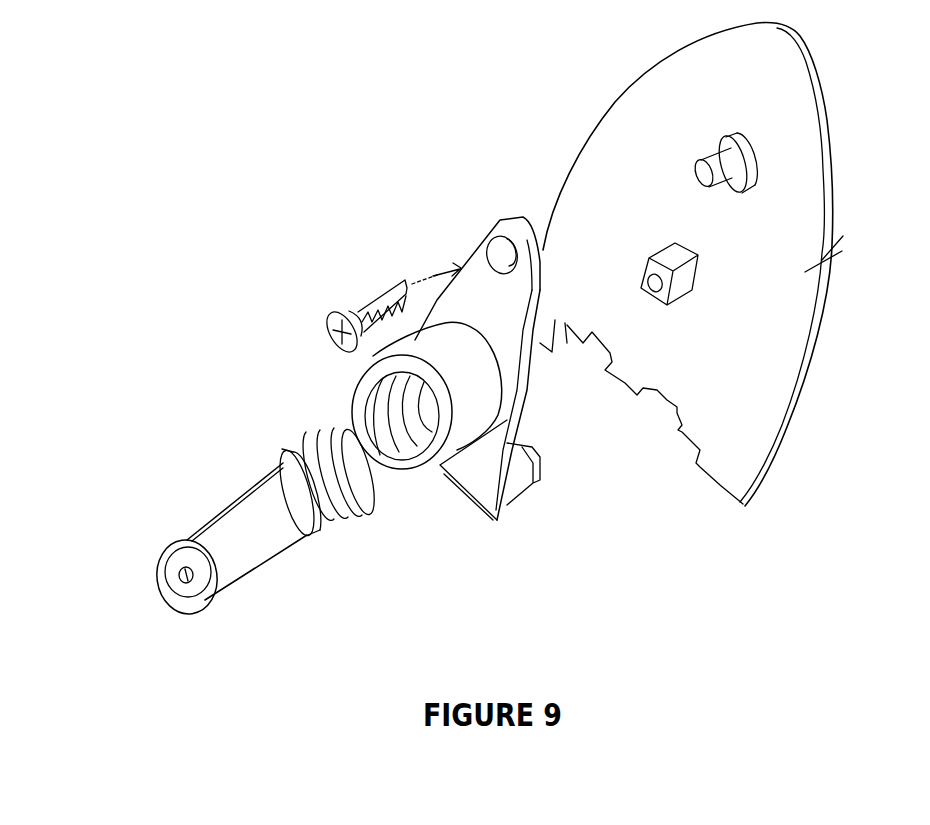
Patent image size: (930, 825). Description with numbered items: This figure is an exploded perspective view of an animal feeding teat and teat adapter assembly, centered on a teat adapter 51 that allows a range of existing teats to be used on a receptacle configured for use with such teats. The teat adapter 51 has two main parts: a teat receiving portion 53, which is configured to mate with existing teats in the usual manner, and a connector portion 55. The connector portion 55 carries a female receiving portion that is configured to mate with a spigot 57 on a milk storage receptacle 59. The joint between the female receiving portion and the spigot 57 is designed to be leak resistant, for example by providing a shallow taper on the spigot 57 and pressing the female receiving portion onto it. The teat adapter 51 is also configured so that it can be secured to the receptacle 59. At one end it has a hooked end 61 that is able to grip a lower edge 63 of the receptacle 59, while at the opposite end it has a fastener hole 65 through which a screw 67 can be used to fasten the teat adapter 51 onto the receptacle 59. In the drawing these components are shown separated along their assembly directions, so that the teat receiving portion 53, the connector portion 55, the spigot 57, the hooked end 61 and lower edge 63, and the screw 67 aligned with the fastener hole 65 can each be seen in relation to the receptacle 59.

The teat adapter 51 is at (522, 505).
The teat receiving portion 53 is at (373, 477).
The connector portion 55 is at (537, 393).
The spigot 57 is at (670, 305).
The milk storage receptacle 59 is at (778, 450).
The hooked end 61 is at (554, 485).
The lower edge 63 is at (667, 405).
The fastener hole 65 is at (693, 185).
The screw 67 is at (333, 306).